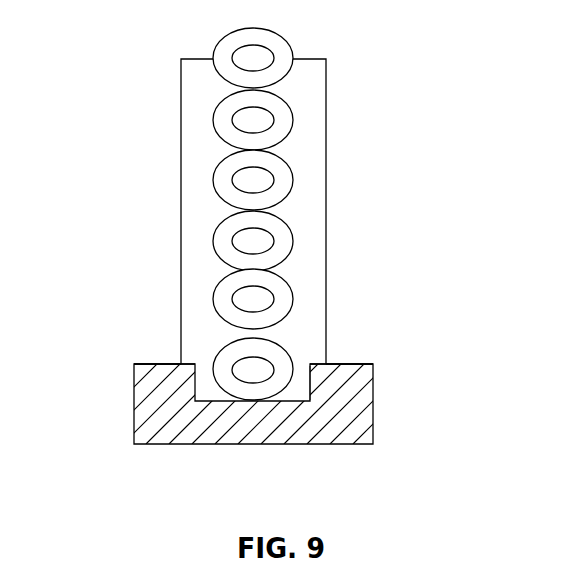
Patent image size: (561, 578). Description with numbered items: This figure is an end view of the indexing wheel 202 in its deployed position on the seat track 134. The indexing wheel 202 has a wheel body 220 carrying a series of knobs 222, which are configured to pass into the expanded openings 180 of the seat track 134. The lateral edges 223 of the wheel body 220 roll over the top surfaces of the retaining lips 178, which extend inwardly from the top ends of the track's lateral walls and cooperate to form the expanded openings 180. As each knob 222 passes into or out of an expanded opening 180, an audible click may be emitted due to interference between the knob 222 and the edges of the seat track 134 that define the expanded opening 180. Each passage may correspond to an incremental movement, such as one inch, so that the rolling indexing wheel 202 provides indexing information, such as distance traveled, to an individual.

The indexing wheel 202 is at (336, 214).
The wheel body 220 is at (326, 175).
The knobs 222 is at (281, 279).
The expanded openings 180 is at (299, 372).
The lateral edges 223 is at (135, 372).
The seat track 134 is at (373, 432).
The retaining lips 178 is at (157, 363).